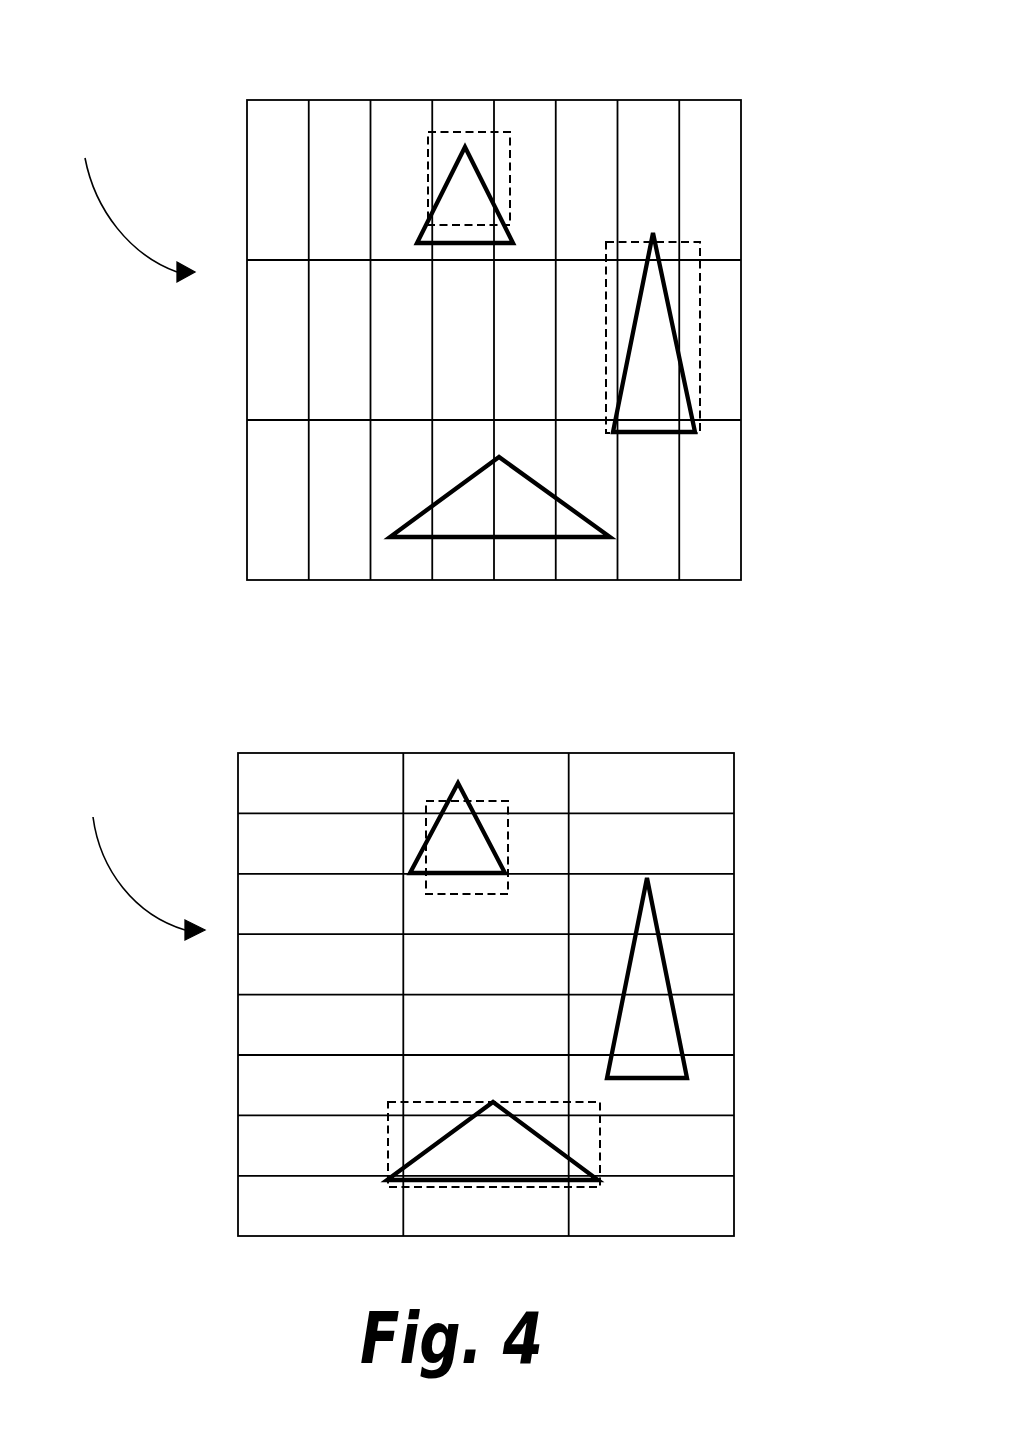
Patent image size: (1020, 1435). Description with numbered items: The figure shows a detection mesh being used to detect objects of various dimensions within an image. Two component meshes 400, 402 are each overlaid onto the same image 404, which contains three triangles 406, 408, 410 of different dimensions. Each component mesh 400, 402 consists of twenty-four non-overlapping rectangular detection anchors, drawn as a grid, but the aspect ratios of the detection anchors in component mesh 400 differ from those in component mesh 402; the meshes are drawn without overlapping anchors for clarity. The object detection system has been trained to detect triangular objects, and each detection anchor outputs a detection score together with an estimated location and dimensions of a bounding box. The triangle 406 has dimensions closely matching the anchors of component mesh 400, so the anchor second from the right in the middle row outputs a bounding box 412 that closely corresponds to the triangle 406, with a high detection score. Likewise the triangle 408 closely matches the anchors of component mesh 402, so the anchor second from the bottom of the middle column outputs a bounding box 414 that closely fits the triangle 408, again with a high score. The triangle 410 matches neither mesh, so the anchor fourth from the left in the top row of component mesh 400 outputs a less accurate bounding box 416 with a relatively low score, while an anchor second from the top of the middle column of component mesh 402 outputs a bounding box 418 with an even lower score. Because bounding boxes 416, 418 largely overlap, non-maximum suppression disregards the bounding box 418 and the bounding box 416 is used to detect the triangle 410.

The component mesh 400 is at (647, 98).
The component mesh 402 is at (640, 750).
The image 404 is at (127, 527).
The triangle 406 is at (670, 308).
The triangle 408 is at (548, 495).
The triangle 410 is at (447, 190).
The bounding box 412 is at (700, 380).
The bounding box 414 is at (392, 1132).
The bounding box 416 is at (458, 130).
The bounding box 418 is at (490, 802).